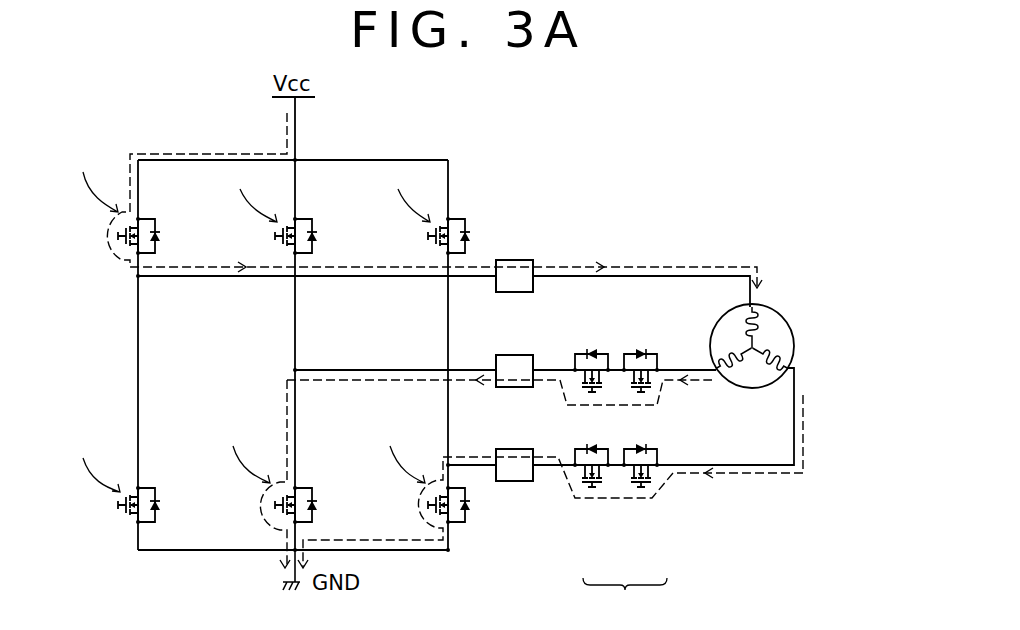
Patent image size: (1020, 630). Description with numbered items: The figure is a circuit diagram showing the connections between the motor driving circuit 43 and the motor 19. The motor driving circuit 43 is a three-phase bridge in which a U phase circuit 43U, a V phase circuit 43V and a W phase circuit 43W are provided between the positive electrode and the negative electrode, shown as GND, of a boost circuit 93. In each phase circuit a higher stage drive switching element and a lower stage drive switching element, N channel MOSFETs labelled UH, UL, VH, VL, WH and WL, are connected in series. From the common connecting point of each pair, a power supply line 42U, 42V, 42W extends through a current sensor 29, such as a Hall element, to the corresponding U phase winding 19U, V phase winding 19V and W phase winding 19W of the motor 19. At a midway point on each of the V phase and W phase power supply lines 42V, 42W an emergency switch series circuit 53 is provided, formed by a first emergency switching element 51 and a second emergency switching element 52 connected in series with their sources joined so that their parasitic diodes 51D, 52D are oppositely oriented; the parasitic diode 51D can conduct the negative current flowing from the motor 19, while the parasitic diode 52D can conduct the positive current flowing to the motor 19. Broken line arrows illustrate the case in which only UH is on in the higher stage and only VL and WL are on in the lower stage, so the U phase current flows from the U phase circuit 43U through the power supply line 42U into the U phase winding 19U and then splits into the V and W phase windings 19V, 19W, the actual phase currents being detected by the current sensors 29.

The boost circuit 93 is at (322, 84).
The motor driving circuit 43 is at (446, 146).
The U phase circuit 43U is at (138, 373).
The V phase circuit 43V is at (295, 323).
The W phase circuit 43W is at (448, 322).
The current sensor 29 is at (516, 293).
The U phase power supply line 42U is at (718, 272).
The V phase power supply line 42V is at (706, 381).
The W phase power supply line 42W is at (753, 474).
The first emergency switching element 51 is at (586, 401).
The second emergency switching element 52 is at (657, 395).
The parasitic diode 51D is at (593, 348).
The parasitic diode 52D is at (642, 348).
The emergency switch series circuit 53 is at (625, 601).
The motor 19 is at (792, 305).
The U phase winding 19U is at (760, 322).
The V phase winding 19V is at (750, 385).
The W phase winding 19W is at (766, 374).